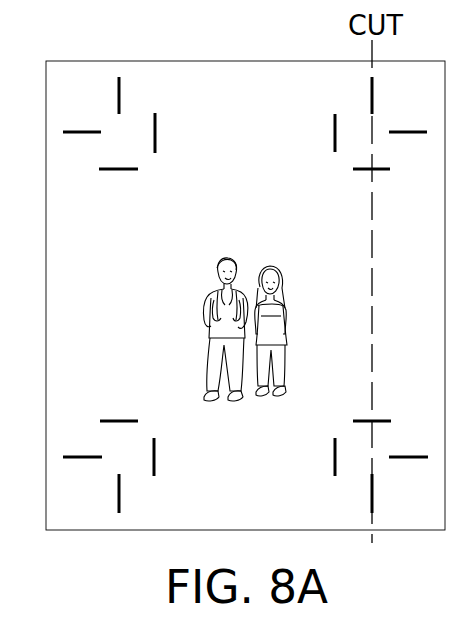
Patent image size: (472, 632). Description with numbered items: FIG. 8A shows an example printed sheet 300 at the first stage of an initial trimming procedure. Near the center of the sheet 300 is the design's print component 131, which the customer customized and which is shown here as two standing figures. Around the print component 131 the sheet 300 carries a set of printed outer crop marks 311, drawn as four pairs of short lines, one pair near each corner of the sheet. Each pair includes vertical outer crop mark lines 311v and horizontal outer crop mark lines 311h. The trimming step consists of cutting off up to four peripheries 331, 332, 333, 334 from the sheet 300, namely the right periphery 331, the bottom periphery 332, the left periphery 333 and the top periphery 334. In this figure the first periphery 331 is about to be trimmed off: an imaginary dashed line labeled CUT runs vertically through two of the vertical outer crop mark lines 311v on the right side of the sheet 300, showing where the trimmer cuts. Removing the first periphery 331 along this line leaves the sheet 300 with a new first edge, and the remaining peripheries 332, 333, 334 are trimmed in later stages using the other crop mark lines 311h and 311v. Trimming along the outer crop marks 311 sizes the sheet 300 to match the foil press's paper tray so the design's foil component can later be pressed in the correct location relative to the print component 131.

The printed sheet 300 is at (160, 333).
The print component 131 is at (207, 350).
The outer crop marks 311 is at (100, 87).
The outer crop mark lines 311v is at (371, 106).
The outer crop mark lines 311h is at (394, 134).
The first periphery 331 is at (442, 303).
The periphery 332 is at (273, 526).
The periphery 333 is at (98, 305).
The periphery 334 is at (257, 91).